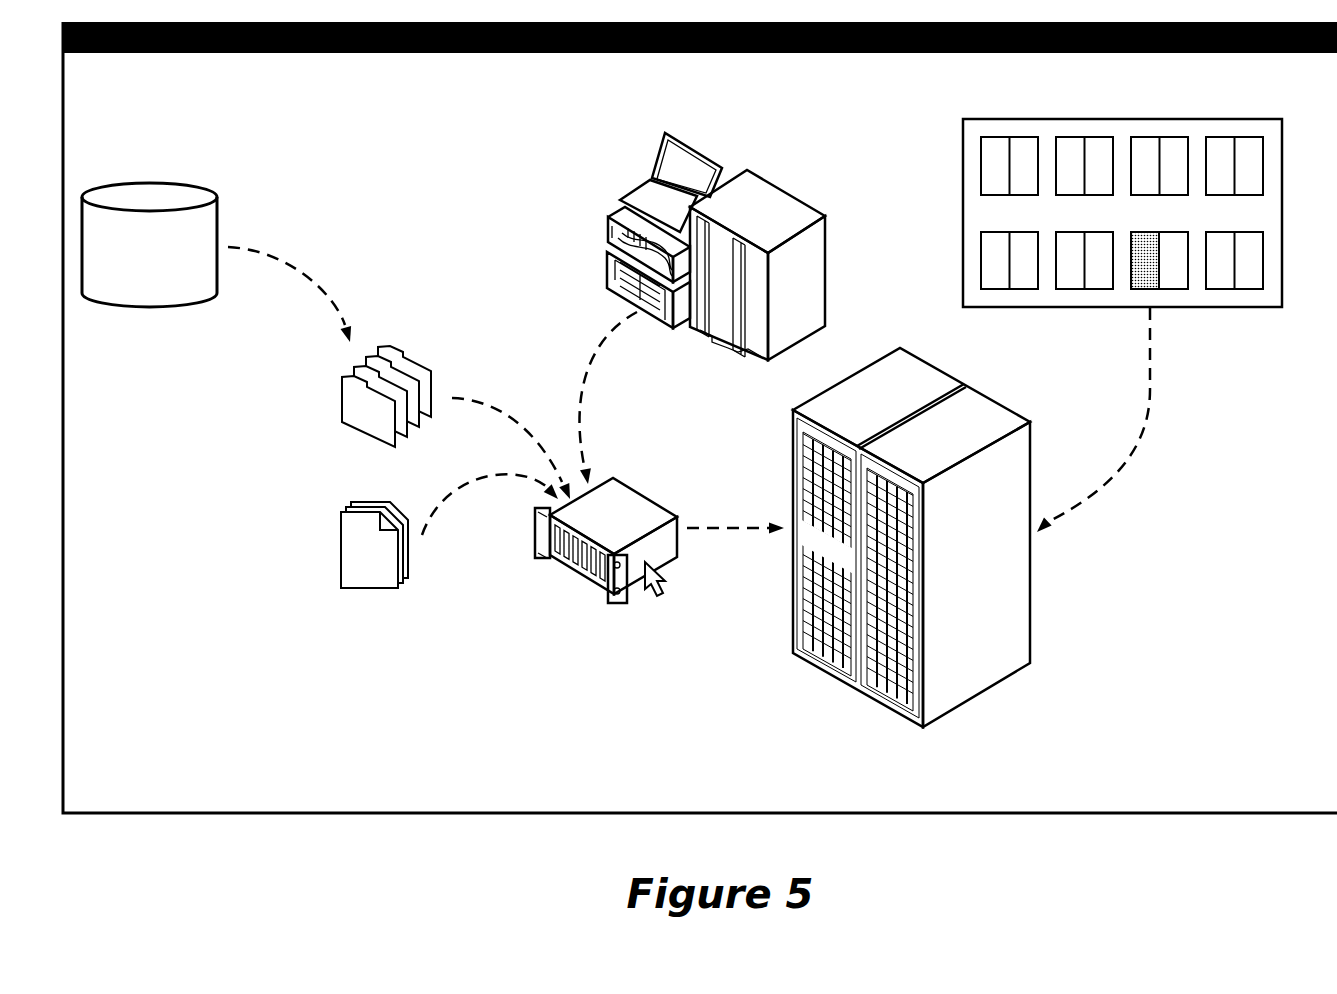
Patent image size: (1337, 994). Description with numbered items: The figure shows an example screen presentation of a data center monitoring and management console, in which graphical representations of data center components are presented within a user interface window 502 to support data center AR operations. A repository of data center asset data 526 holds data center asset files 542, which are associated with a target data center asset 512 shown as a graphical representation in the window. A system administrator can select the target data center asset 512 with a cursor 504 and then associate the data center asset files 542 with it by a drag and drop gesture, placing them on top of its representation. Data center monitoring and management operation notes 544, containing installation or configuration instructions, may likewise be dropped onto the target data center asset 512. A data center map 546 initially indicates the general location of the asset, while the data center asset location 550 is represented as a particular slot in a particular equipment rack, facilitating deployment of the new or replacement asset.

The user interface (UI) window 502 is at (1335, 106).
The repository of data center asset data 526 is at (133, 289).
The data center asset files 542 is at (342, 391).
The data center monitoring and management operation notes 544 is at (342, 530).
The target data center asset 512 is at (583, 580).
The cursor 504 is at (660, 585).
The data center asset location 550 is at (812, 532).
The data center map 546 is at (1102, 308).